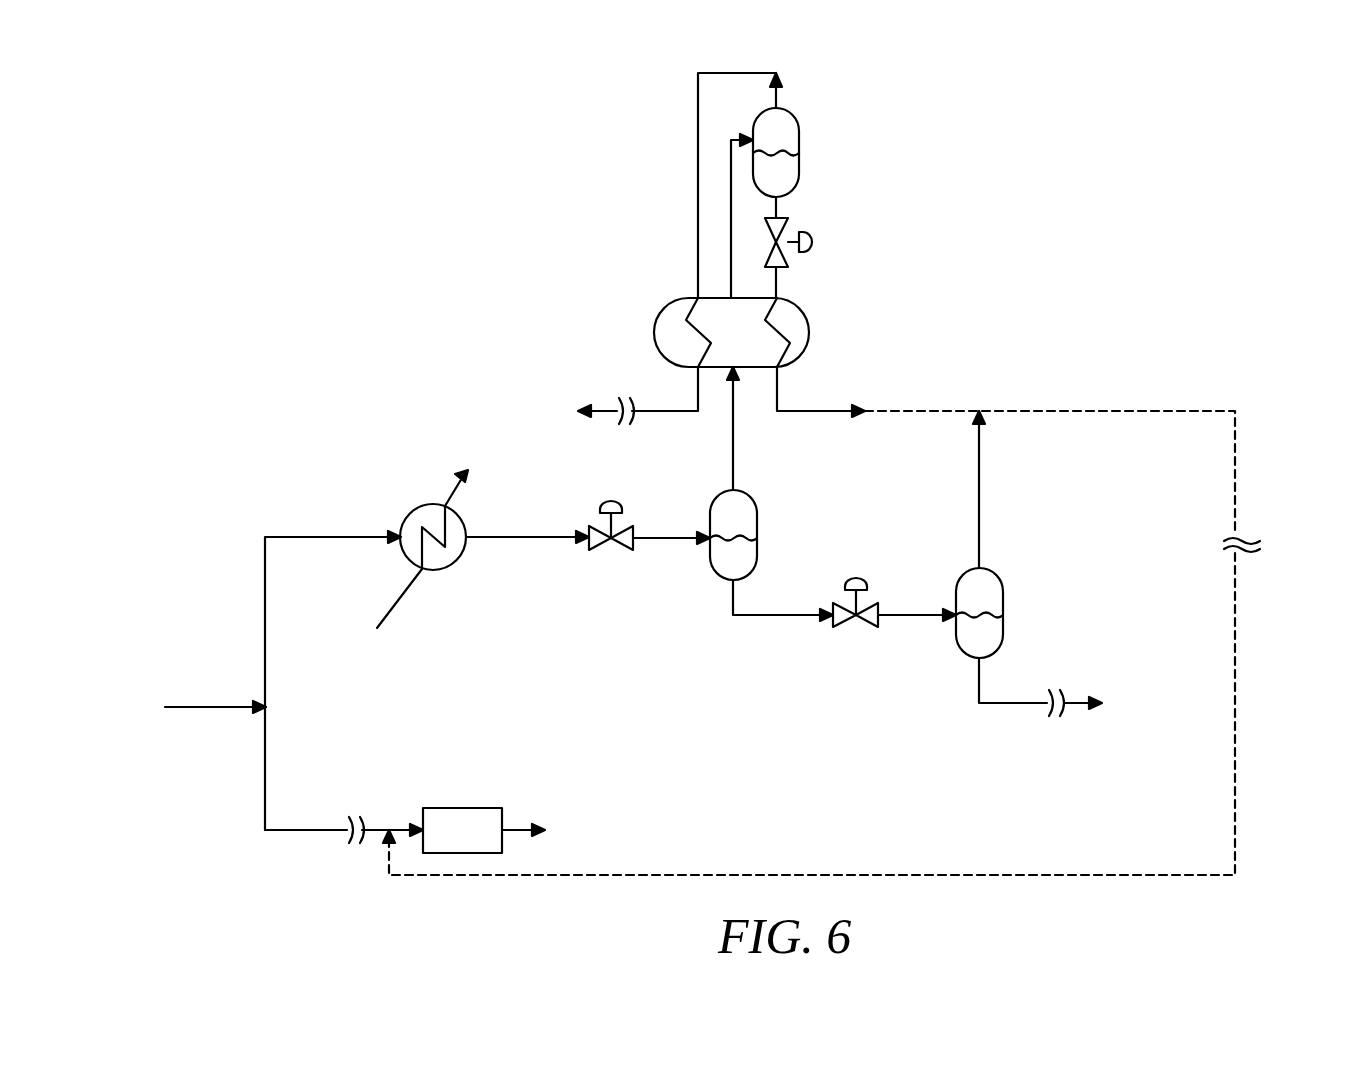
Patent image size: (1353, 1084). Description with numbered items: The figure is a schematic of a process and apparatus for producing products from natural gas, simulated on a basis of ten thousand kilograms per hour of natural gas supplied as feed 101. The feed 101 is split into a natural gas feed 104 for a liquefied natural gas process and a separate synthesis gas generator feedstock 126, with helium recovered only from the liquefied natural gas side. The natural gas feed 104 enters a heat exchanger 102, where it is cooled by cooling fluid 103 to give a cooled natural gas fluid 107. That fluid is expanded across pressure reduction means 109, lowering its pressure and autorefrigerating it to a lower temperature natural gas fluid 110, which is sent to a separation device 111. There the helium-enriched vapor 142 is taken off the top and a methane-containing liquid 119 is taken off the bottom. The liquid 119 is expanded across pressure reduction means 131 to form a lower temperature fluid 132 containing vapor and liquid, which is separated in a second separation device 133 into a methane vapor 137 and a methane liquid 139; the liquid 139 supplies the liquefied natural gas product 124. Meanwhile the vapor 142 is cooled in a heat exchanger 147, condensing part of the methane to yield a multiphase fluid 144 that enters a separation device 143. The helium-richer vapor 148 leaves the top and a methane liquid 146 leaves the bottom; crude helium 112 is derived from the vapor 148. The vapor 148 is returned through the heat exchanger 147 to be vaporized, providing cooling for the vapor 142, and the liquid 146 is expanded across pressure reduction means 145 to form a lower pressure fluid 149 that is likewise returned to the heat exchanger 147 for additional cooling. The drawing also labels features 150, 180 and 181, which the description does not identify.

The natural gas feed 101 is at (210, 707).
The heat exchanger 102 is at (447, 570).
The cooling fluid 103 is at (413, 583).
The natural gas feed 104 is at (338, 531).
The cooled natural gas fluid 107 is at (543, 530).
The pressure reduction means 109 is at (622, 547).
The lower temperature natural gas fluid 110 is at (675, 533).
The separation device 111 is at (757, 523).
The crude helium 112 is at (605, 408).
The liquid 119 is at (727, 592).
The liquefied natural gas product 124 is at (1080, 700).
The synthesis gas generator feedstock 126 is at (300, 830).
The pressure reduction means 131 is at (867, 627).
The lower temperature fluid 132 is at (920, 615).
The separation device 133 is at (1003, 602).
The vapor 137 is at (979, 533).
The liquid 139 is at (979, 670).
The vapor 142 is at (735, 422).
The separation device 143 is at (800, 138).
The multiphase fluid 144 is at (730, 183).
The pressure reduction means 145 is at (810, 242).
The liquid 146 is at (778, 205).
The heat exchanger 147 is at (809, 320).
The vapor 148 is at (778, 98).
The lower pressure fluid 149 is at (778, 285).
The bottoms stream to control 150 is at (778, 387).
The process unit 180 is at (462, 830).
The product stream from unit 180 181 is at (512, 827).